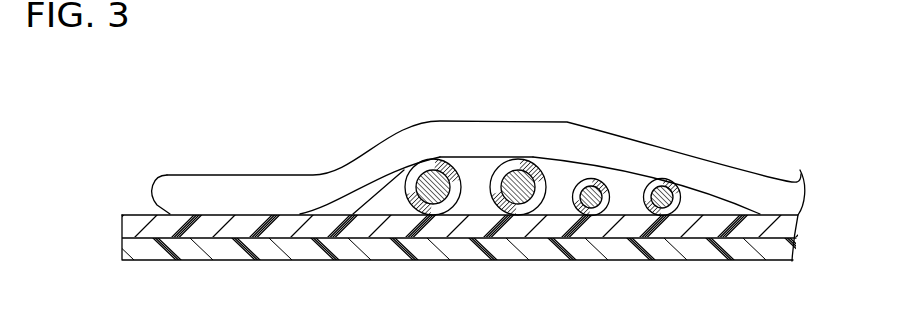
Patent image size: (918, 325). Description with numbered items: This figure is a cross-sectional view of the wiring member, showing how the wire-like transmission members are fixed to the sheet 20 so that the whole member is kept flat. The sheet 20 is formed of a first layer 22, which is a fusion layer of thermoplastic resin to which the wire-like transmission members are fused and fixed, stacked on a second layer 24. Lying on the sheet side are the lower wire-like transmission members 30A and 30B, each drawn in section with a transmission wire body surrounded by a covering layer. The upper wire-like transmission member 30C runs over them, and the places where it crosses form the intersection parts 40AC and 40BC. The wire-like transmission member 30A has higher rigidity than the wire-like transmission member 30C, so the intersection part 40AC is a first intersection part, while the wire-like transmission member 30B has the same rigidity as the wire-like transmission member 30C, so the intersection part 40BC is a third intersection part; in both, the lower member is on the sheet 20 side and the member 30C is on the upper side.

The sheet 20 is at (421, 217).
The first layer 22 is at (124, 226).
The second layer 24 is at (73, 206).
The wire-like transmission member 30C is at (243, 192).
The wire-like transmission member 30A is at (466, 214).
The wire-like transmission member 30B is at (628, 214).
The intersection part 40AC is at (482, 190).
The intersection part 40BC is at (640, 199).